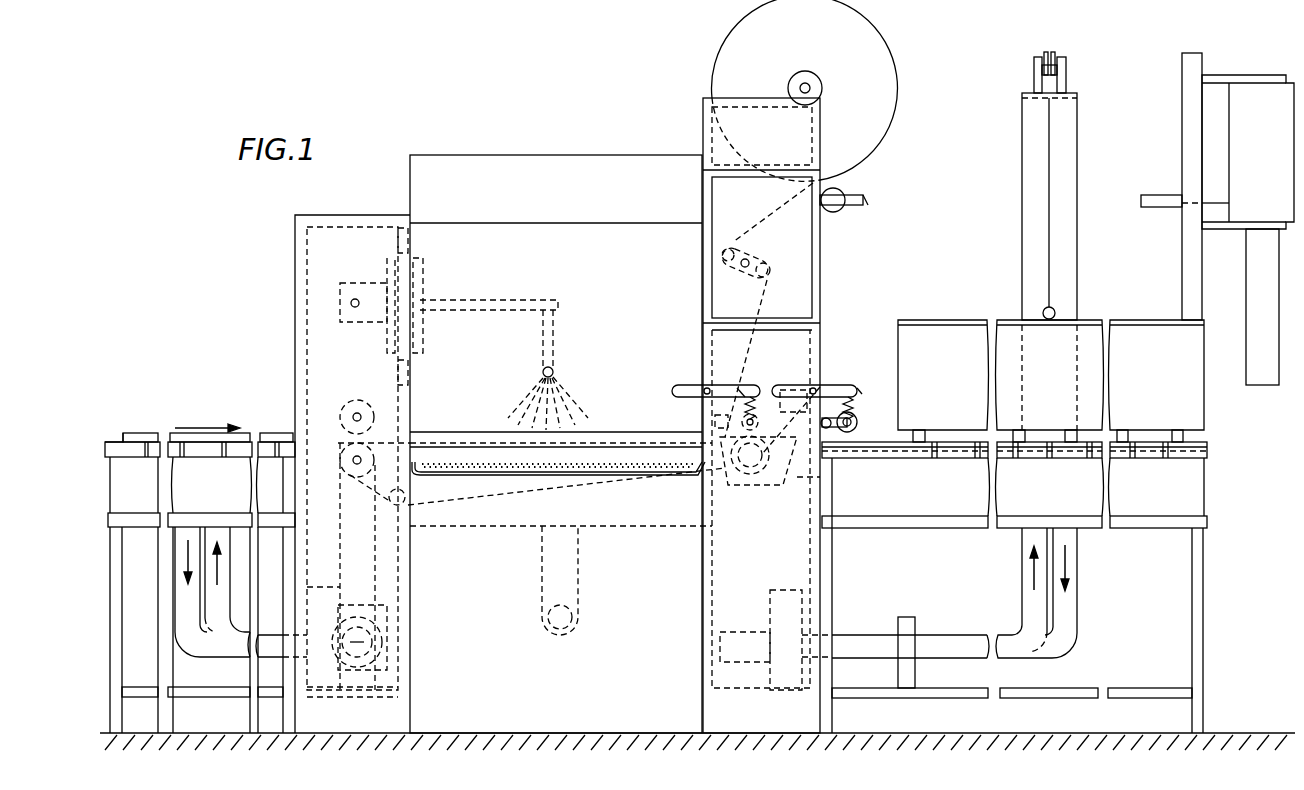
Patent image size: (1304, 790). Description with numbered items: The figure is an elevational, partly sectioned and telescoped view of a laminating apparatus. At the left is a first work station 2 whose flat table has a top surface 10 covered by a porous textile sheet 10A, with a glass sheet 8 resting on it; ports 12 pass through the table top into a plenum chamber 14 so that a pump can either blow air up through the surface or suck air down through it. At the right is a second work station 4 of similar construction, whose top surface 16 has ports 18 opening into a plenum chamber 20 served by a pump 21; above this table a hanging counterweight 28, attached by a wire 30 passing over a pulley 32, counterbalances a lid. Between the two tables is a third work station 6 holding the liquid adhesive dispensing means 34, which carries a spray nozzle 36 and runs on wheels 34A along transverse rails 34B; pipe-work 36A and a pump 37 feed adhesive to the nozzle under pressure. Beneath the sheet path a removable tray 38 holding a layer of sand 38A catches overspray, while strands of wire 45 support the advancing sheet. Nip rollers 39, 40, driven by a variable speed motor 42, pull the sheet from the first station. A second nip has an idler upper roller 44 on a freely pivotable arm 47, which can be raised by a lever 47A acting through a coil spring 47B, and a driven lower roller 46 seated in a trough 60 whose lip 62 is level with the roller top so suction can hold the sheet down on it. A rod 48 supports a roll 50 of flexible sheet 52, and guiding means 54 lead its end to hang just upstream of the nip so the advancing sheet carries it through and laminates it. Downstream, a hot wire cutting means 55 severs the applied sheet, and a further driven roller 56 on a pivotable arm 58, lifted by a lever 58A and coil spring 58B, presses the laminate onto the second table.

The first work station 2 is at (204, 376).
The second work station 4 is at (1016, 36).
The third work station 6 is at (674, 89).
The sheet 8 is at (150, 435).
The top surface 10 is at (128, 447).
The porous textile sheet 10A is at (120, 441).
The ports 12 is at (228, 459).
The plenum chamber 14 is at (148, 499).
The top surface 16 is at (1210, 445).
The ports 18 is at (975, 458).
The plenum chamber 20 is at (918, 506).
The pump 21 is at (802, 597).
The hanging counterweight 28 is at (1064, 165).
The wire 30 is at (1051, 120).
The pulley 32 is at (1052, 55).
The liquid adhesive dispensing means 34 is at (468, 302).
The wheels 34A is at (400, 258).
The transverse rails 34B is at (408, 242).
The spray nozzle 36 is at (553, 368).
The pipe-work 36A is at (853, 198).
The pump 37 is at (1261, 95).
The removable tray 38 is at (482, 477).
The layer of sand 38A is at (530, 467).
The nip roller 39 is at (353, 400).
The nip roller 40 is at (350, 462).
The variable speed motor 42 is at (370, 641).
The upper roller 44 is at (767, 387).
The strands of wire 45 is at (475, 453).
The lower roller 46 is at (758, 487).
The pivotable arm 47 is at (712, 412).
The lever 47A is at (737, 388).
The coil spring 47B is at (745, 395).
The rod 48 is at (807, 90).
The roll 50 is at (885, 112).
The flexible sheet 52 is at (837, 210).
The guiding means 54 is at (755, 248).
The hot wire cutting means 55 is at (822, 378).
The driven roller 56 is at (857, 422).
The pivotable arm 58 is at (830, 427).
The lever 58A is at (853, 392).
The coil spring 58B is at (855, 400).
The trough 60 is at (797, 477).
The lip 62 is at (717, 438).